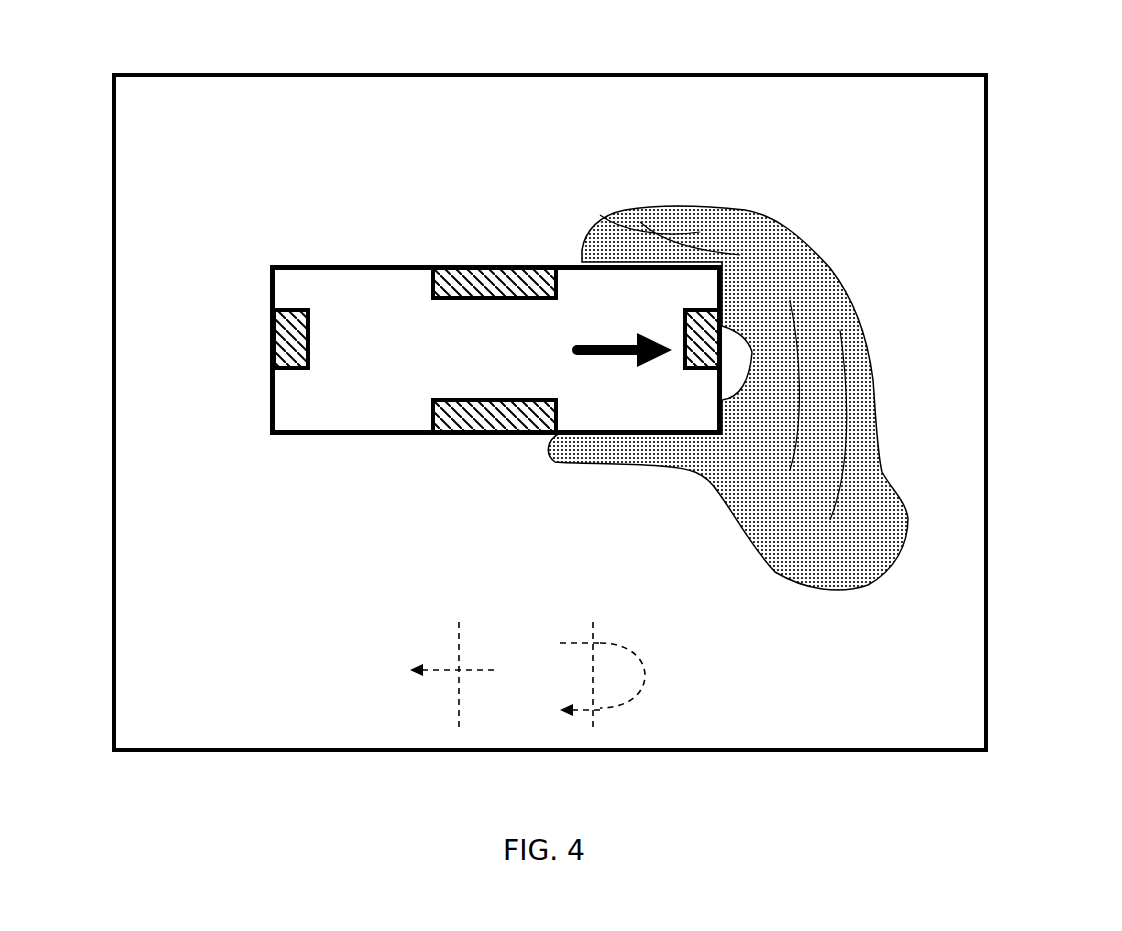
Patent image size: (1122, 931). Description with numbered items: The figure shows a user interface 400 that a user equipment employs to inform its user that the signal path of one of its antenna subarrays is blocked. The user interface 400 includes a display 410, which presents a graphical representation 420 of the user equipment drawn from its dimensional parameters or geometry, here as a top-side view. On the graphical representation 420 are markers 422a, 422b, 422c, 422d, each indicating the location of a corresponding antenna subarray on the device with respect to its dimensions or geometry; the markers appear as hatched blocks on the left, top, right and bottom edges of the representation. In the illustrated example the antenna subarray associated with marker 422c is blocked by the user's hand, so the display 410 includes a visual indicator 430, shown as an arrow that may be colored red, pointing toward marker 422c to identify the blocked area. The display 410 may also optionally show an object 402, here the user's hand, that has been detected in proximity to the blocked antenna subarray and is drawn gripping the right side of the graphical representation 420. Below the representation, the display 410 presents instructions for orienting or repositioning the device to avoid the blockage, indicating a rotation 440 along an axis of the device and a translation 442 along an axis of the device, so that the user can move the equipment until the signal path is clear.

The user interface 400 is at (1040, 118).
The display 410 is at (330, 141).
The object 402 is at (867, 332).
The graphical representation 420 is at (285, 232).
The marker 422a is at (299, 398).
The marker 422b is at (515, 252).
The marker 422c is at (728, 319).
The marker 422d is at (490, 459).
The visual indicator 430 is at (610, 362).
The rotation 440 is at (648, 640).
The translation 442 is at (420, 640).